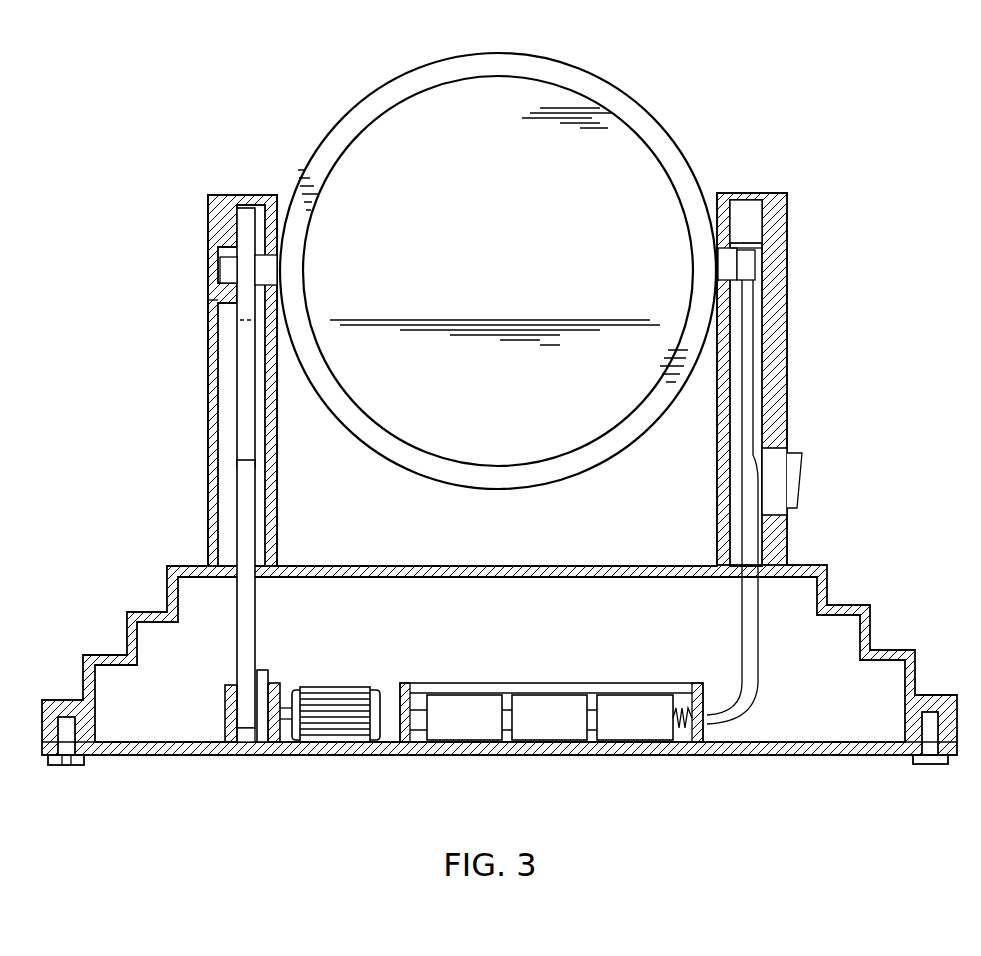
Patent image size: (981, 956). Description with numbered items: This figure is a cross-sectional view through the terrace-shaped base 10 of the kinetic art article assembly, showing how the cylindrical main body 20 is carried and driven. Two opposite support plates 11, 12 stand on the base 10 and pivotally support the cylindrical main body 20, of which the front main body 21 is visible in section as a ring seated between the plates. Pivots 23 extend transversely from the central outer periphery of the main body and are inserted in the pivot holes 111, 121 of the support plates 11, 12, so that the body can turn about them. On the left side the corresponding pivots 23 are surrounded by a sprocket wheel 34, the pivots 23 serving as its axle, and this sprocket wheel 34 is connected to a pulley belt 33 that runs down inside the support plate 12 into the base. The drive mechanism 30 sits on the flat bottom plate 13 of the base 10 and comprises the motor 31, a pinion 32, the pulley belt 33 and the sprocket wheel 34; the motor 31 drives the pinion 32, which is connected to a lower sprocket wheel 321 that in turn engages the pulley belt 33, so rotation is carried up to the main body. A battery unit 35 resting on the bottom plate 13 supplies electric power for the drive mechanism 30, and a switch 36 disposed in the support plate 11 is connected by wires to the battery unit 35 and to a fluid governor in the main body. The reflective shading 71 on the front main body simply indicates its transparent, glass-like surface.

The terrace-shaped base 10 is at (917, 663).
The support plate 11 is at (783, 415).
The pivot hole 111 is at (757, 250).
The support plate 12 is at (210, 482).
The pivot hole 121 is at (213, 307).
The flat bottom plate 13 is at (807, 747).
The cylindrical main body 20 is at (633, 83).
The front main body 21 is at (662, 122).
The pivot 23 is at (228, 273).
The drive mechanism 30 is at (276, 667).
The motor 31 is at (348, 702).
The pinion 32 is at (262, 690).
The sprocket wheel 321 is at (227, 732).
The pulley belt 33 is at (243, 622).
The sprocket wheel 34 is at (237, 233).
The battery unit 35 is at (542, 720).
The switch 36 is at (777, 493).
The lens 71 is at (553, 108).